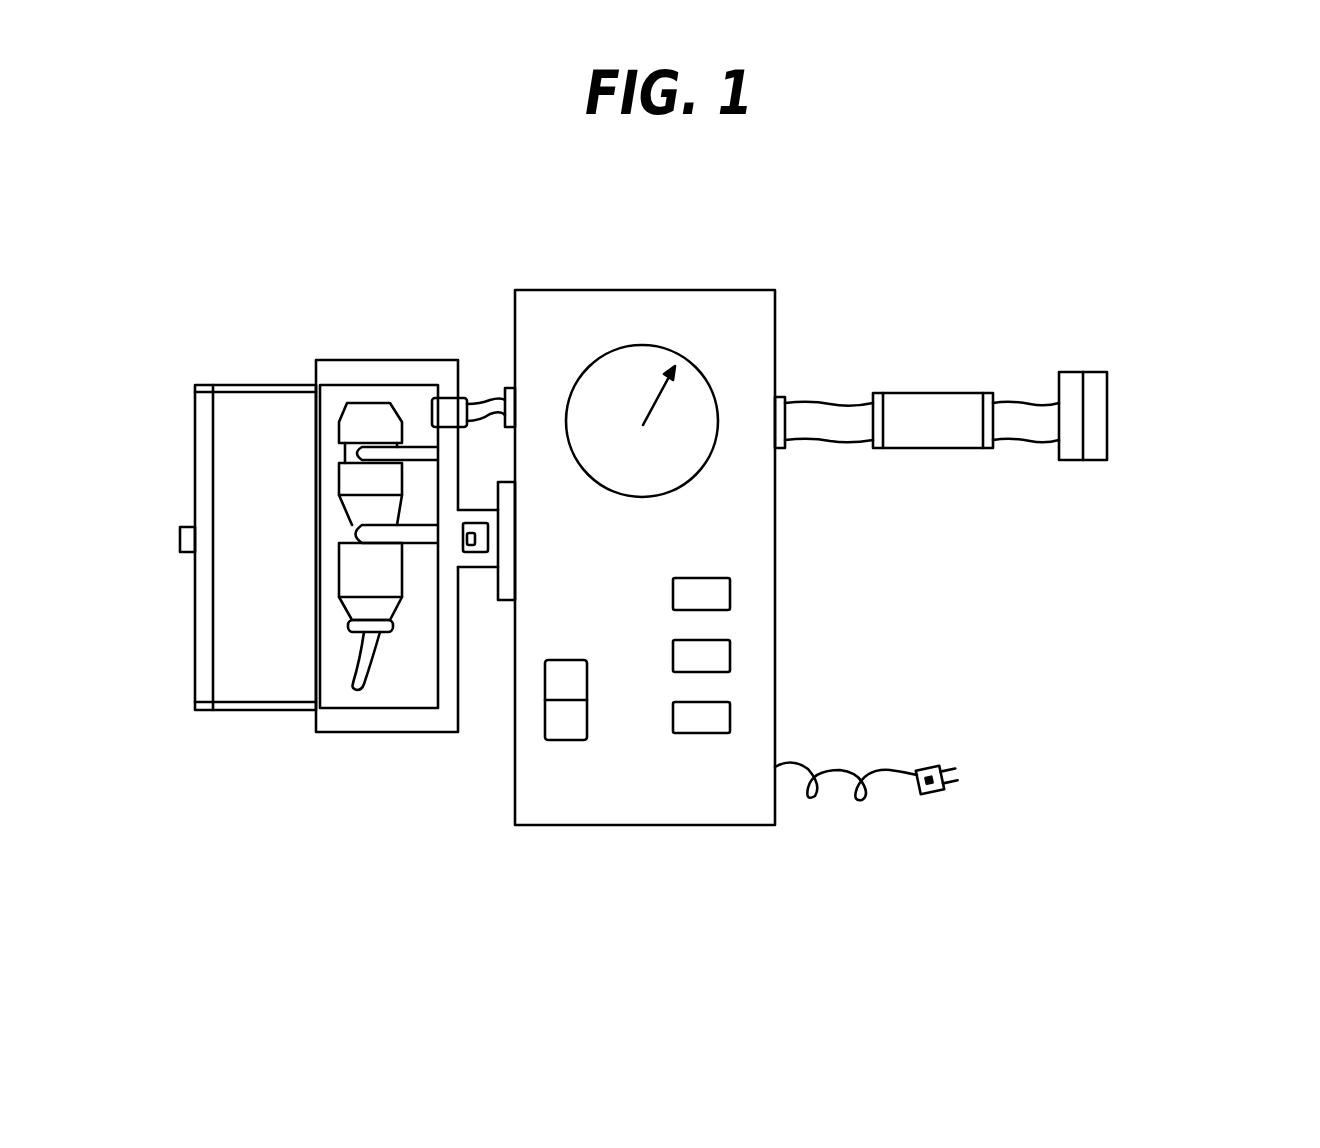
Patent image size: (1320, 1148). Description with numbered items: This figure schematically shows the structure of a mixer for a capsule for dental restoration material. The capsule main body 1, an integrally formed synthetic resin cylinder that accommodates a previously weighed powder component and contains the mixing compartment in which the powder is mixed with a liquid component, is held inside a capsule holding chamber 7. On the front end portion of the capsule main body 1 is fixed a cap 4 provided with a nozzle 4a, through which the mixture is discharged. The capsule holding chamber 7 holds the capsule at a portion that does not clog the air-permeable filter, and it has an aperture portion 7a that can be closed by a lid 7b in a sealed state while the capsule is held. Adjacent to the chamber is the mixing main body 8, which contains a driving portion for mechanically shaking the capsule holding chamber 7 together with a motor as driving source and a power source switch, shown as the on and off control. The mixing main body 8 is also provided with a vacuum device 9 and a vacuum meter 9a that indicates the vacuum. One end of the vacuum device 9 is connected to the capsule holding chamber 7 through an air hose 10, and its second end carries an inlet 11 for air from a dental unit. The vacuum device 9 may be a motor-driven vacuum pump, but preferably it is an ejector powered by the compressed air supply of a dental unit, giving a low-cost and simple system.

The capsule main body 1 is at (366, 405).
The cap 4 is at (353, 578).
The nozzle 4a is at (370, 662).
The capsule holding chamber 7 is at (431, 733).
The aperture portion 7a is at (337, 405).
The lid 7b is at (242, 423).
The mixing main body 8 is at (760, 335).
The vacuum device 9 is at (945, 405).
The vacuum meter 9a is at (652, 358).
The air hose 10 is at (488, 397).
The inlet for air from a dental unit 11 is at (1070, 447).